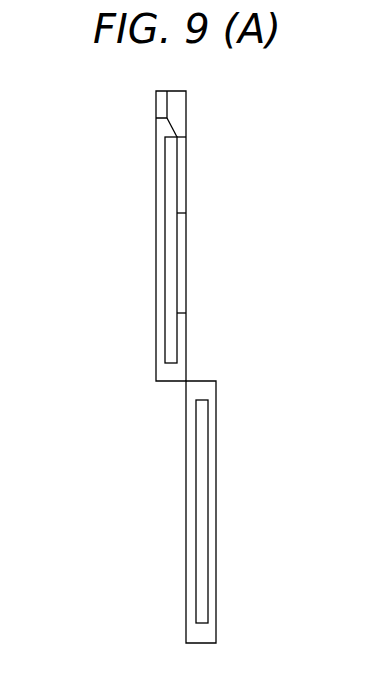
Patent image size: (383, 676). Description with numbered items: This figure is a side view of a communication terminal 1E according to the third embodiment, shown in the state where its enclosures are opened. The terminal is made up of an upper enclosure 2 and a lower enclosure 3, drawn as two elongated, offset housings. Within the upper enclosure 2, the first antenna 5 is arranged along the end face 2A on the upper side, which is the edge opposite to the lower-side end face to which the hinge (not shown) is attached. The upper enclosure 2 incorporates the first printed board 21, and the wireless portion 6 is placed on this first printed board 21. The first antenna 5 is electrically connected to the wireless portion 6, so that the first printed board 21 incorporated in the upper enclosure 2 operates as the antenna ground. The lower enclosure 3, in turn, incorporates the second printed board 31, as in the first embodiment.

The communication terminal 1E is at (115, 131).
The end face 2A is at (158, 76).
The first antenna 5 is at (166, 108).
The wireless portion 6 is at (186, 185).
The upper enclosure 2 is at (186, 252).
The first printed board 21 is at (186, 313).
The lower enclosure 3 is at (216, 632).
The second printed board 31 is at (204, 560).